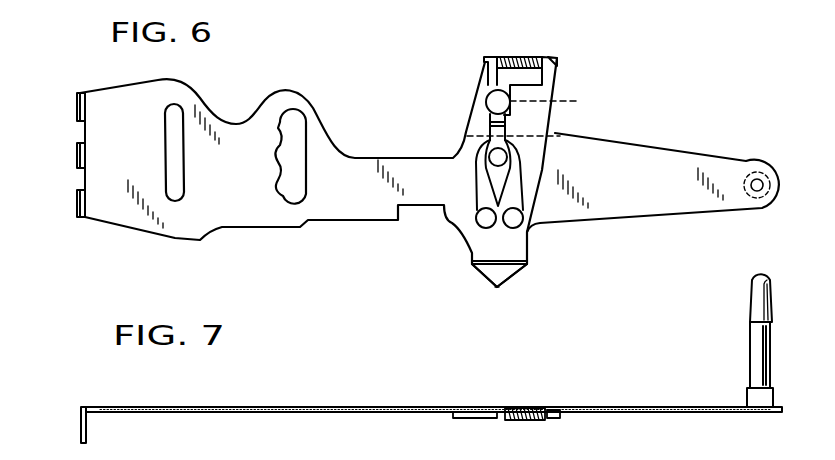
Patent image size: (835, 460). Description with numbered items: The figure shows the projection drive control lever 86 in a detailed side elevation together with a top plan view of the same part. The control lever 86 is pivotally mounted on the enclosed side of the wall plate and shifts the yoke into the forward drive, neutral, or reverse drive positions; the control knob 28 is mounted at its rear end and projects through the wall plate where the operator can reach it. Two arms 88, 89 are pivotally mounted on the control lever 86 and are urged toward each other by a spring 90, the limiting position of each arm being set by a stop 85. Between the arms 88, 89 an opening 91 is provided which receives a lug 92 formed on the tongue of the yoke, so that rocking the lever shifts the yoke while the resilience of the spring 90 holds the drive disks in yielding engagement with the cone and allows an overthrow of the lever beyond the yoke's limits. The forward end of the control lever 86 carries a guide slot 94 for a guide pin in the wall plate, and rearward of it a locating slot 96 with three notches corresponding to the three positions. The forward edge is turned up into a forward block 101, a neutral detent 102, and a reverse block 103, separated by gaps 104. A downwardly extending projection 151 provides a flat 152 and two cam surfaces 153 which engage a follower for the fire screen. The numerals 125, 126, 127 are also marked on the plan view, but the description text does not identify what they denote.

In FIG. 7, the control knob 28 is at (752, 312).
In FIG. 6, the stop 85 is at (478, 113).
In FIG. 6, the control lever 86 is at (612, 216).
In FIG. 7, the control lever 86 is at (667, 386).
In FIG. 6, the arm 88 is at (486, 63).
In FIG. 7, the arm 88 is at (485, 413).
In FIG. 6, the arm 89 is at (558, 74).
In FIG. 7, the arm 89 is at (553, 420).
In FIG. 6, the spring 90 is at (531, 55).
In FIG. 7, the spring 90 is at (522, 421).
In FIG. 6, the opening 91 is at (486, 92).
In FIG. 6, the lug 92 is at (559, 104).
In FIG. 6, the guide slot 94 is at (171, 137).
In FIG. 6, the locating slot 96 is at (290, 187).
In FIG. 6, the forward block 101 is at (82, 103).
In FIG. 7, the forward block 101 is at (80, 425).
In FIG. 6, the neutral detent 102 is at (86, 156).
In FIG. 6, the reverse block 103 is at (86, 218).
In FIG. 6, the gaps 104 is at (84, 178).
In FIG. 6, the projection 151 is at (515, 245).
In FIG. 6, the flat 152 is at (498, 288).
In FIG. 6, the cam surfaces 153 is at (481, 276).
In FIG. 7, the element 125 is at (150, 449).
In FIG. 7, the element 126 is at (230, 451).
In FIG. 7, the element 127 is at (303, 449).